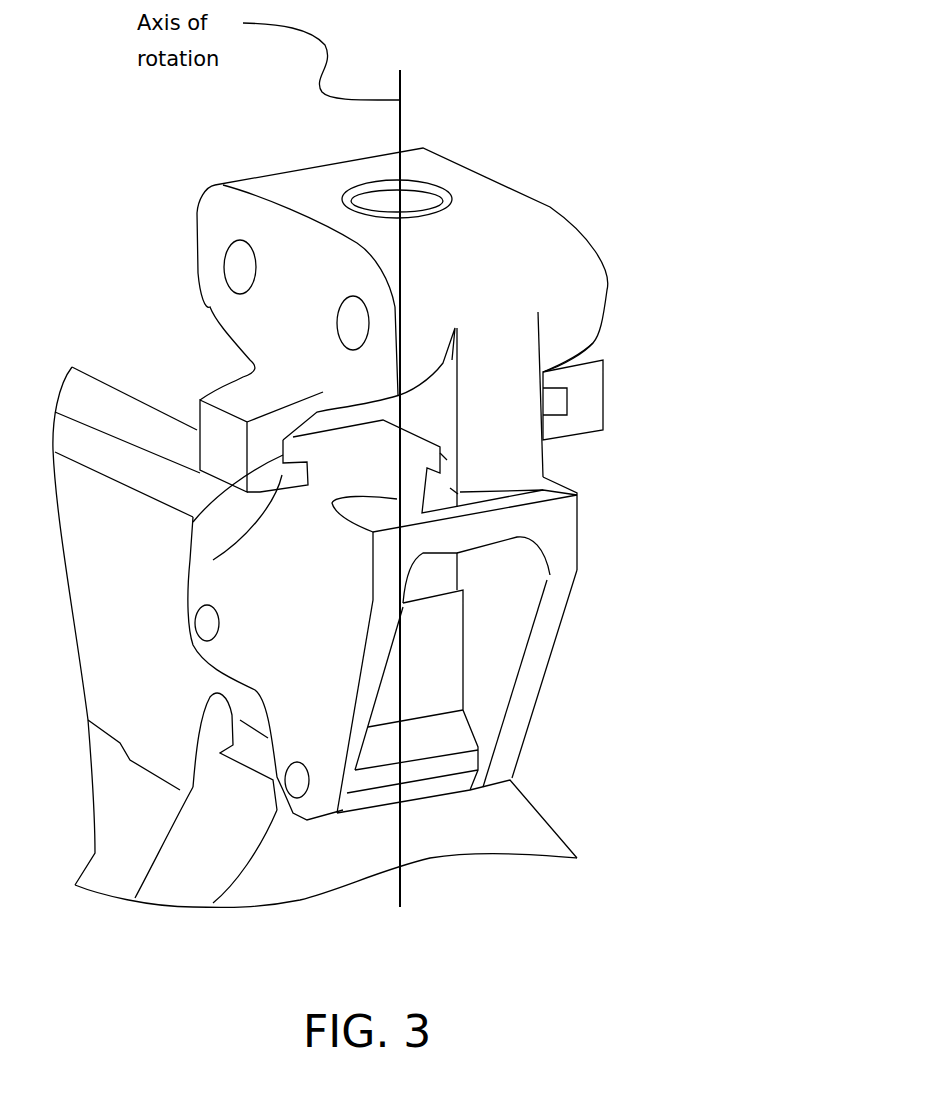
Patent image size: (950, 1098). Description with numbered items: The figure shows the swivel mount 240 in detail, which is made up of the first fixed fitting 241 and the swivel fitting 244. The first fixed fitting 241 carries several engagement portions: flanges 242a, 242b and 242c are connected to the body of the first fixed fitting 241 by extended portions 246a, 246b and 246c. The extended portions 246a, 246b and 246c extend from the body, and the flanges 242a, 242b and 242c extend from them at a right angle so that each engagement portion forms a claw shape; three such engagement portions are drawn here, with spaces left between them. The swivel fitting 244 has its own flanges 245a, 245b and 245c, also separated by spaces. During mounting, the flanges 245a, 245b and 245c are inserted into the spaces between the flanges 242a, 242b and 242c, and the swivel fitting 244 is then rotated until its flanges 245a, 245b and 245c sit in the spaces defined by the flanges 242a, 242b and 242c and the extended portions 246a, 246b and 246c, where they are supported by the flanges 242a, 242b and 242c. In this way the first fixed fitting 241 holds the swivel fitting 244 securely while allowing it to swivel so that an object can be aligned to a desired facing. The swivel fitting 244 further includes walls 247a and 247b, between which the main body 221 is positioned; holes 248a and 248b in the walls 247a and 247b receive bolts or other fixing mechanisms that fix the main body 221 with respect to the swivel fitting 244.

The main body 221 is at (107, 682).
The swivel mount 240 is at (406, 443).
The first fixed fitting 241 is at (530, 212).
The flange 242a is at (193, 567).
The flange 242b is at (427, 480).
The flange 242c is at (586, 426).
The swivel fitting 244 is at (483, 655).
The flange 245a is at (193, 520).
The flange 245b is at (440, 453).
The flange 245c is at (562, 406).
The extended portion 246a is at (213, 420).
The extended portion 246b is at (450, 488).
The extended portion 246c is at (605, 402).
The wall 247a is at (343, 662).
The wall 247b is at (512, 660).
The hole 248a is at (200, 625).
The hole 248b is at (300, 797).